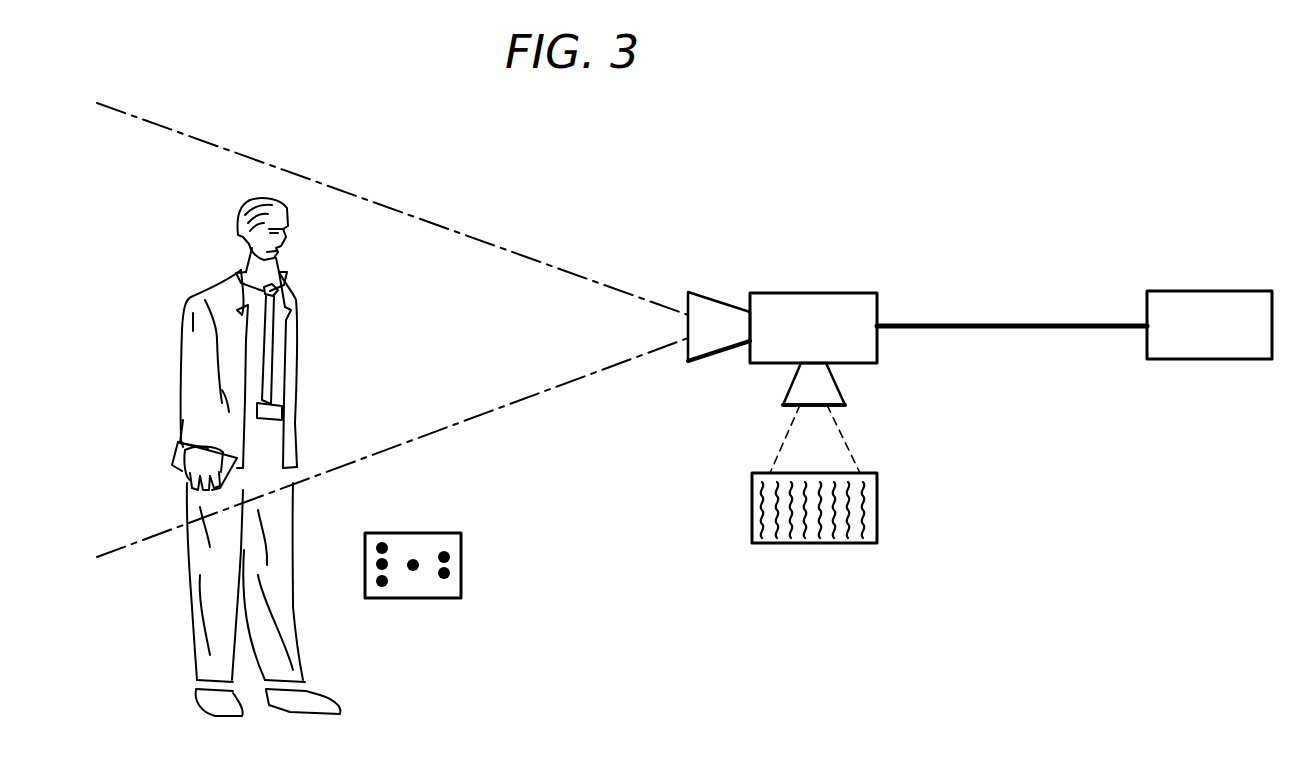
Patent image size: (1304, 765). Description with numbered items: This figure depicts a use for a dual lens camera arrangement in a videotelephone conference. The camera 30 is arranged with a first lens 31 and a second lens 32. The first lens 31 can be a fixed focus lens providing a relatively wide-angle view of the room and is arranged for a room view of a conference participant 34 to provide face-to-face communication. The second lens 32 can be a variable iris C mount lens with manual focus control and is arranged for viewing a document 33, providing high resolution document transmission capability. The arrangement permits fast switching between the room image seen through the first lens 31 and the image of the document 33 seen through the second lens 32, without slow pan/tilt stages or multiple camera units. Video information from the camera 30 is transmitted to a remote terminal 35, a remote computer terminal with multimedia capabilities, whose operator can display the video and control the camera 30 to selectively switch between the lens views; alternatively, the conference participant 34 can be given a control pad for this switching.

The camera 30 is at (833, 293).
The first lens 31 is at (707, 360).
The second lens 32 is at (845, 400).
The document 33 is at (774, 543).
The conference participant 34 is at (186, 317).
The remote terminal 35 is at (1253, 291).